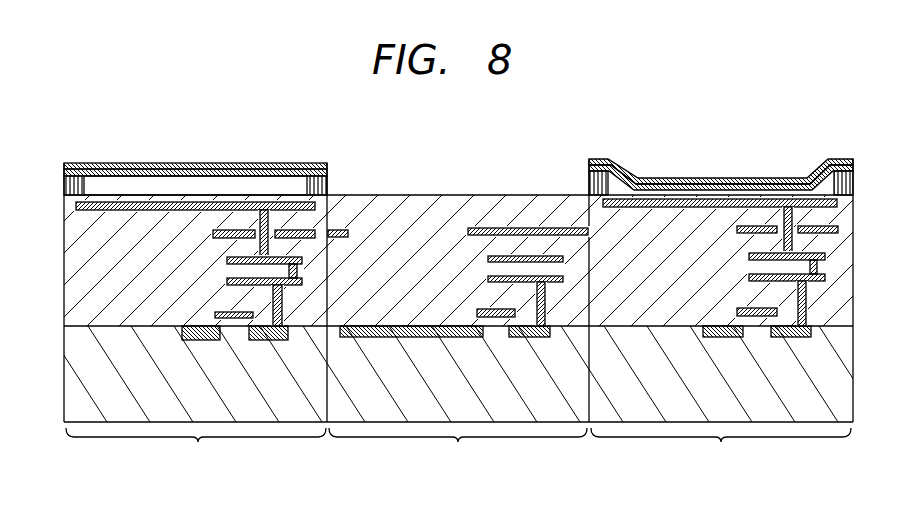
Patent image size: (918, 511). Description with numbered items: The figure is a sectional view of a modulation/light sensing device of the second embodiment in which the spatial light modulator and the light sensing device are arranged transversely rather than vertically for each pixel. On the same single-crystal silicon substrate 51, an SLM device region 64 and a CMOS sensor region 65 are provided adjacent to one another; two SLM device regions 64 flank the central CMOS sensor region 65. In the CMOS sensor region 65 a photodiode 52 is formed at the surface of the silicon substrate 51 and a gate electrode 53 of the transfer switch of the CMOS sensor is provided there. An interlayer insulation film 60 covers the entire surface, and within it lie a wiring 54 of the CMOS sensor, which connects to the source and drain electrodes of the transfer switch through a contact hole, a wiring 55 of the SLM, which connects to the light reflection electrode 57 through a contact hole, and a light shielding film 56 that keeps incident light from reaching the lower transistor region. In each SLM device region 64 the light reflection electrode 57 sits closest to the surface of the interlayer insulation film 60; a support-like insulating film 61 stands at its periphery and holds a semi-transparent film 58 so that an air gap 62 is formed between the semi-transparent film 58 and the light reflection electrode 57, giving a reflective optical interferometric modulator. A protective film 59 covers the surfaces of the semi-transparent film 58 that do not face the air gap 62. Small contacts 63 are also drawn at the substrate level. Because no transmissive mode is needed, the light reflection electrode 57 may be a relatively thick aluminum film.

The single-crystal silicon substrate 51 is at (70, 381).
The photodiode 52 is at (418, 337).
The gate electrode 53 is at (477, 313).
The wiring of the CMOS sensor 54 is at (472, 213).
The wiring of the SLM 55 is at (228, 243).
The light shielding film 56 is at (213, 234).
The light reflection electrode 57 is at (113, 211).
The semi-transparent film 58 is at (328, 166).
The protective film 59 is at (96, 163).
The interlayer insulation film 60 is at (76, 283).
The support-like insulating film 61 is at (328, 185).
The air gap 62 is at (200, 180).
The contact 63 is at (213, 314).
The SLM device region 64 is at (458, 450).
The CMOS sensor region 65 is at (458, 450).